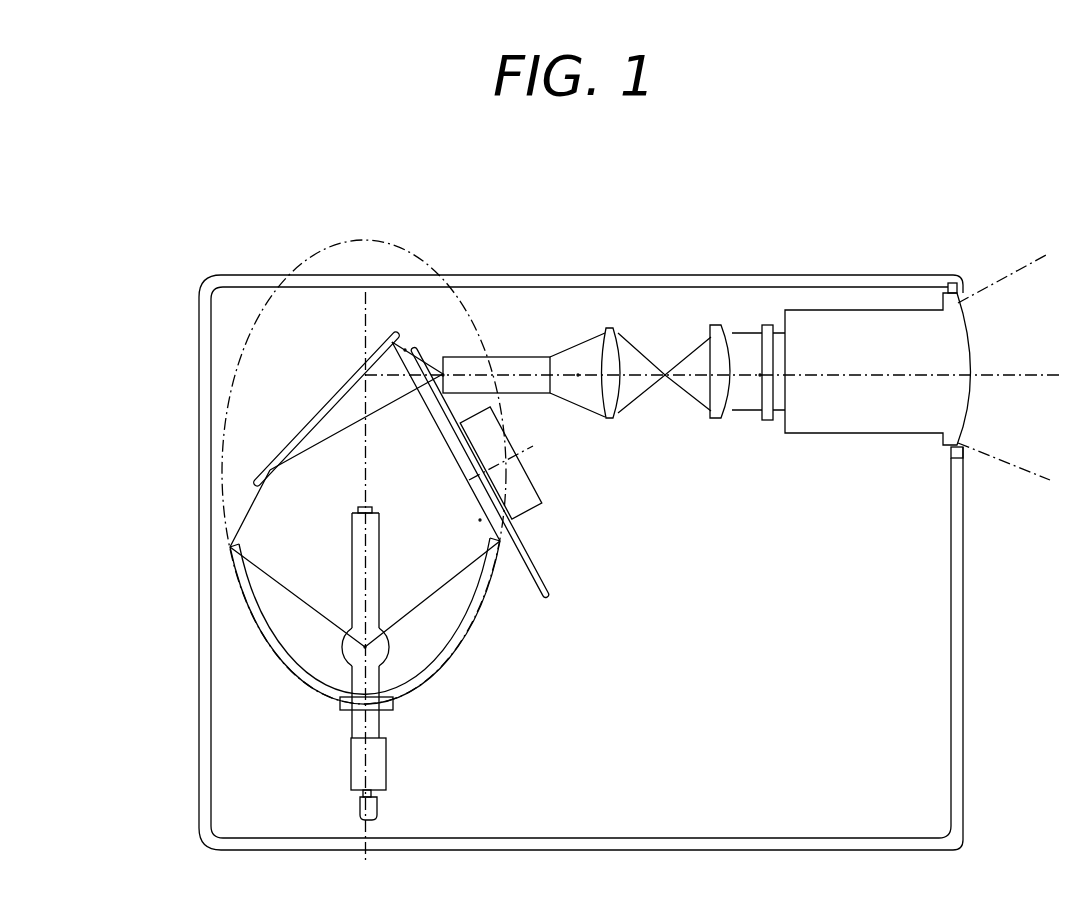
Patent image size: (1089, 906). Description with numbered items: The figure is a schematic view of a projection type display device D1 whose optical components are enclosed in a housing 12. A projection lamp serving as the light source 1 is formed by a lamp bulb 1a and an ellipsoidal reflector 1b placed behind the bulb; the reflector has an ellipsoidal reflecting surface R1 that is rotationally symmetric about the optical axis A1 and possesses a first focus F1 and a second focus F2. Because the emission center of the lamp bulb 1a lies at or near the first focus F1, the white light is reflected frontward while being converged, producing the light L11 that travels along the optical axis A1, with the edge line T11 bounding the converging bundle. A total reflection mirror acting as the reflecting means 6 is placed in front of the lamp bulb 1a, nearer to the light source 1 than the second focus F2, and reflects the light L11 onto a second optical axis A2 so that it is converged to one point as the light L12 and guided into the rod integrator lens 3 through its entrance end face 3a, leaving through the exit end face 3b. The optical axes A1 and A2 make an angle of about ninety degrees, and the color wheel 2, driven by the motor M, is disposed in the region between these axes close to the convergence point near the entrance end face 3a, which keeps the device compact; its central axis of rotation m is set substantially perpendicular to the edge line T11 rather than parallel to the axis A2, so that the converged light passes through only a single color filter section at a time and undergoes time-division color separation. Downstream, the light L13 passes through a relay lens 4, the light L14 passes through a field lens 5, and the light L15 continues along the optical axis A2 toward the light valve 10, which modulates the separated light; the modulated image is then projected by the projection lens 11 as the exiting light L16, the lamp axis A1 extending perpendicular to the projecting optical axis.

The projection type display device D1 is at (170, 276).
The housing 12 is at (198, 337).
The ellipsoidal reflecting surface R1 is at (233, 372).
The projection lamp 1 is at (113, 705).
The lamp bulb 1a is at (316, 699).
The ellipsoidal reflector 1b is at (325, 702).
The optical axis A1 is at (246, 556).
The first focus F1 is at (347, 653).
The exiting light L11 is at (277, 502).
The optical axis A2 is at (365, 362).
The second focus F2 is at (440, 375).
The exiting light L12 is at (410, 347).
The edge line T11 is at (475, 505).
The reflecting means 6 is at (335, 395).
The color wheel 2 is at (549, 590).
The motor M is at (532, 510).
The axis of rotation m is at (528, 448).
The rod integrator lens 3 is at (537, 181).
The entrance end face 3a is at (462, 356).
The exit end face 3b is at (543, 356).
The exiting light L13 is at (582, 356).
The relay lens 4 is at (611, 328).
The exiting light L14 is at (637, 358).
The field lens 5 is at (714, 326).
The light valve 10 is at (742, 335).
The exiting light L15 is at (768, 328).
The projection lens 11 is at (873, 310).
The exiting light L16 is at (1007, 292).